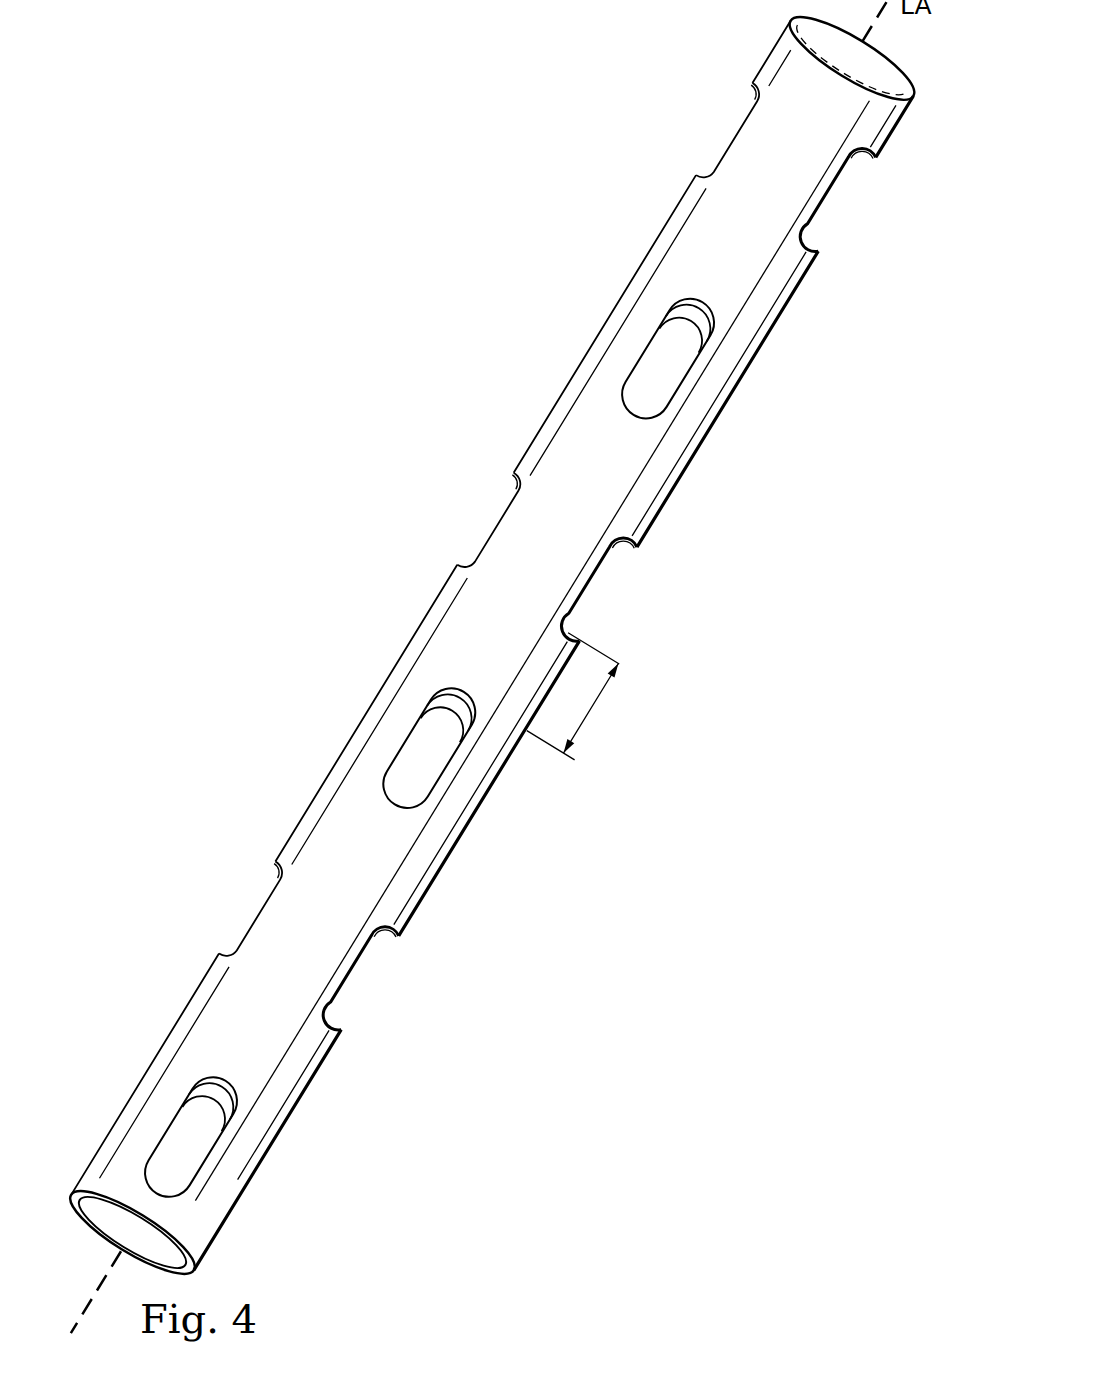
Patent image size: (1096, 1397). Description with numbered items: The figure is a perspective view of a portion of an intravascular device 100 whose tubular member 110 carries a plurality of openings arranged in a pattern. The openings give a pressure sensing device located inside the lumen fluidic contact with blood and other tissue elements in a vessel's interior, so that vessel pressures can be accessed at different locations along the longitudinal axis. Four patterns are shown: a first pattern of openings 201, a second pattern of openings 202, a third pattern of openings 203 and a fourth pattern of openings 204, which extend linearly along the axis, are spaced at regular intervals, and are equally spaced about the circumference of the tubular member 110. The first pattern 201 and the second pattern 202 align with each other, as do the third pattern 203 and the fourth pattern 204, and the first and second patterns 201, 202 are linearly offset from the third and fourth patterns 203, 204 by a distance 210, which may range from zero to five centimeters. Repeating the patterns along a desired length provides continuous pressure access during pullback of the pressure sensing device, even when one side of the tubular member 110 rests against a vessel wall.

The intravascular device 100 is at (164, 512).
The tubular member 110 is at (436, 877).
The first pattern of openings 201 is at (634, 381).
The second pattern of openings 202 is at (684, 340).
The third pattern of openings 203 is at (828, 188).
The fourth pattern of openings 204 is at (742, 133).
The distance 210 is at (592, 707).